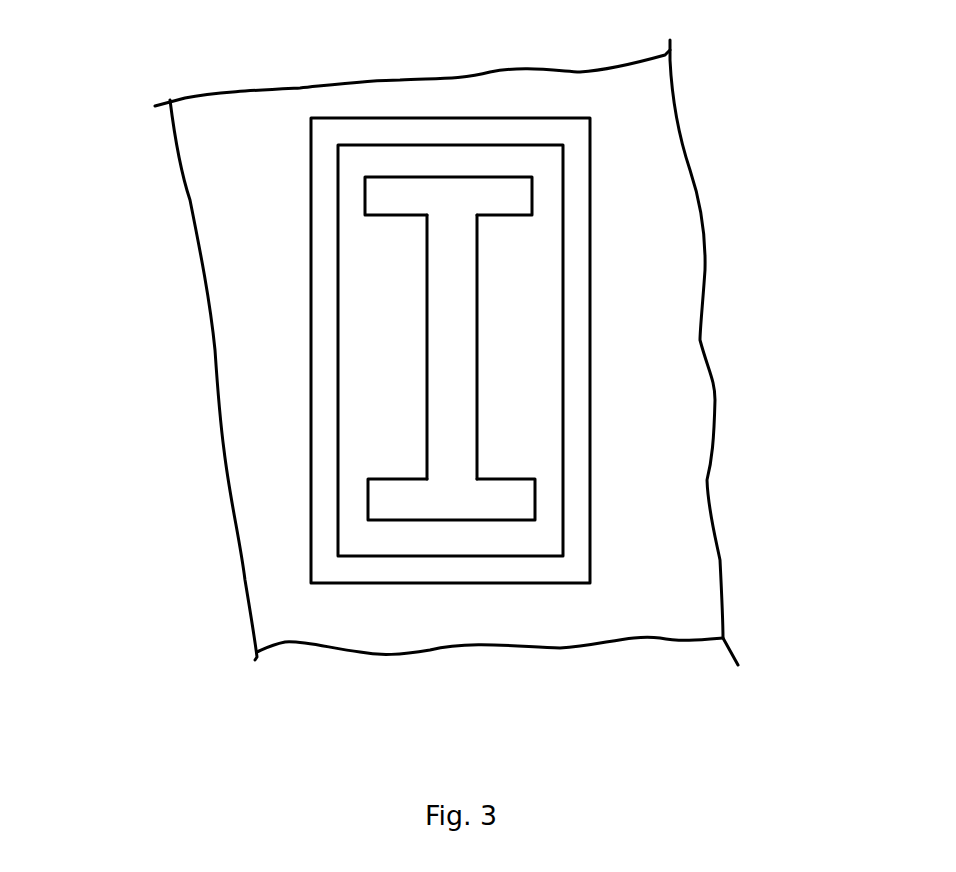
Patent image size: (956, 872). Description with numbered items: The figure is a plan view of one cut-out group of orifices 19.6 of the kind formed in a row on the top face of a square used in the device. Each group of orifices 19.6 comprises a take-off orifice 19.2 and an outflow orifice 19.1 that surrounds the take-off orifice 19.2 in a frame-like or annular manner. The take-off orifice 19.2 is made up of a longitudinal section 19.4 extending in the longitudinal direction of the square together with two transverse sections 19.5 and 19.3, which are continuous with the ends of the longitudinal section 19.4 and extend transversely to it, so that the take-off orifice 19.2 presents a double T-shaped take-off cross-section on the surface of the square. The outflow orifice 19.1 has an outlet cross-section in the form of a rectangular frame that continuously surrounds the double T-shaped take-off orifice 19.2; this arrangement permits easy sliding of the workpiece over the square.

The outflow orifice 19.1 is at (358, 573).
The take-off orifice 19.2 is at (581, 363).
The transverse section 19.3 is at (400, 197).
The longitudinal section 19.4 is at (465, 338).
The transverse section 19.5 is at (398, 507).
The group of orifices 19.6 is at (300, 423).